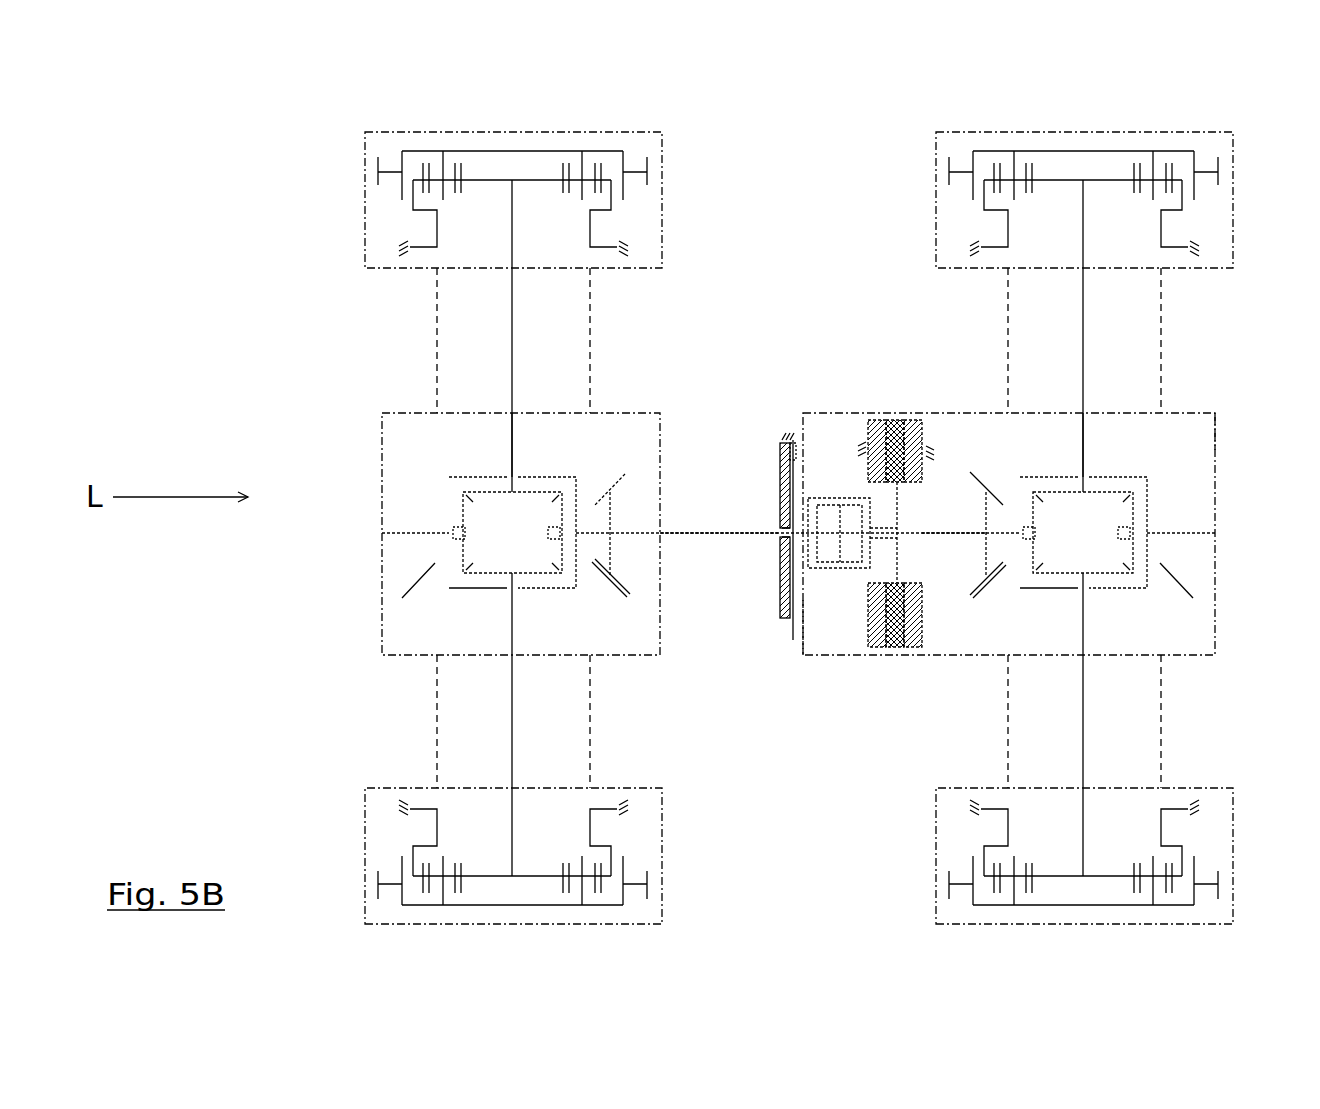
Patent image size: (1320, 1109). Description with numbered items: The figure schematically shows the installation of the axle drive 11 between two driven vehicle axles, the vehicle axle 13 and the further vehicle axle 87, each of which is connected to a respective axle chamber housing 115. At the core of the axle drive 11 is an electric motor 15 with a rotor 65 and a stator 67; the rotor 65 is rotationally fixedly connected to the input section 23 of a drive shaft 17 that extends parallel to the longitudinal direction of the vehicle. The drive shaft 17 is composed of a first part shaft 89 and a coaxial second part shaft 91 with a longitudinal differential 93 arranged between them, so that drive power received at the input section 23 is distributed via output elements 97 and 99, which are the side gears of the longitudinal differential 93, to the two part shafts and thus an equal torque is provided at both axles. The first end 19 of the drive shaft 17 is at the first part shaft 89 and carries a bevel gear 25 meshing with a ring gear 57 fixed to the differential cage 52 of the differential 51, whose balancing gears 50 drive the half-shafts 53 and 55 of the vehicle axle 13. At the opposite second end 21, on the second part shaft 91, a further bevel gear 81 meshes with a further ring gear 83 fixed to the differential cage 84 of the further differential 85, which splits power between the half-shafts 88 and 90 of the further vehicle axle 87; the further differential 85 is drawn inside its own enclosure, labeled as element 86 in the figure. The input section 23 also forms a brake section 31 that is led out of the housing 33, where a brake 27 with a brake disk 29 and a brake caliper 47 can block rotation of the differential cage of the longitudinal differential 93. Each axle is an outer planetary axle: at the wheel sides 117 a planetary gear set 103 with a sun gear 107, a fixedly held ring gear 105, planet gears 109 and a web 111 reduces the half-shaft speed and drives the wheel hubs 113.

The axle drive 11 is at (856, 392).
The vehicle axle 13 is at (1083, 368).
The electric motor 15 is at (946, 437).
The drive shaft 17 is at (955, 530).
The first end 19 is at (955, 540).
The second end 21 is at (661, 533).
The input section 23 is at (793, 440).
The bevel gear 25 is at (993, 492).
The brake 27 is at (772, 640).
The brake disk 29 is at (785, 553).
The brake section 31 is at (793, 600).
The housing 33 is at (1215, 438).
The brake caliper 47 is at (778, 455).
The balancing gears 50 is at (1038, 498).
The differential 51 is at (1196, 533).
The differential cage 52 is at (1120, 590).
The half-shaft 53 is at (1083, 467).
The half-shaft 55 is at (1083, 645).
The ring gear 57 is at (982, 592).
The rotor 65 is at (895, 440).
The stator 67 is at (876, 440).
The further bevel gear 81 is at (617, 478).
The further ring gear 83 is at (627, 598).
The differential cage 84 is at (553, 590).
The further differential 85 is at (404, 517).
The housing 86 is at (383, 575).
The further vehicle axle 87 is at (513, 330).
The half-shaft 88 is at (513, 440).
The first part shaft 89 is at (903, 532).
The half-shaft 90 is at (513, 622).
The second part shaft 91 is at (724, 528).
The longitudinal differential 93 is at (845, 592).
The output element 97 is at (863, 545).
The output element 99 is at (818, 556).
The planetary gear set 103 is at (543, 130).
The ring gear 105 is at (423, 168).
The sun gear 107 is at (462, 170).
The planet gears 109 is at (428, 170).
The web 111 is at (614, 150).
The wheel hubs 113 is at (378, 166).
The axle chamber housings 115 is at (591, 745).
The wheel sides 117 is at (662, 212).